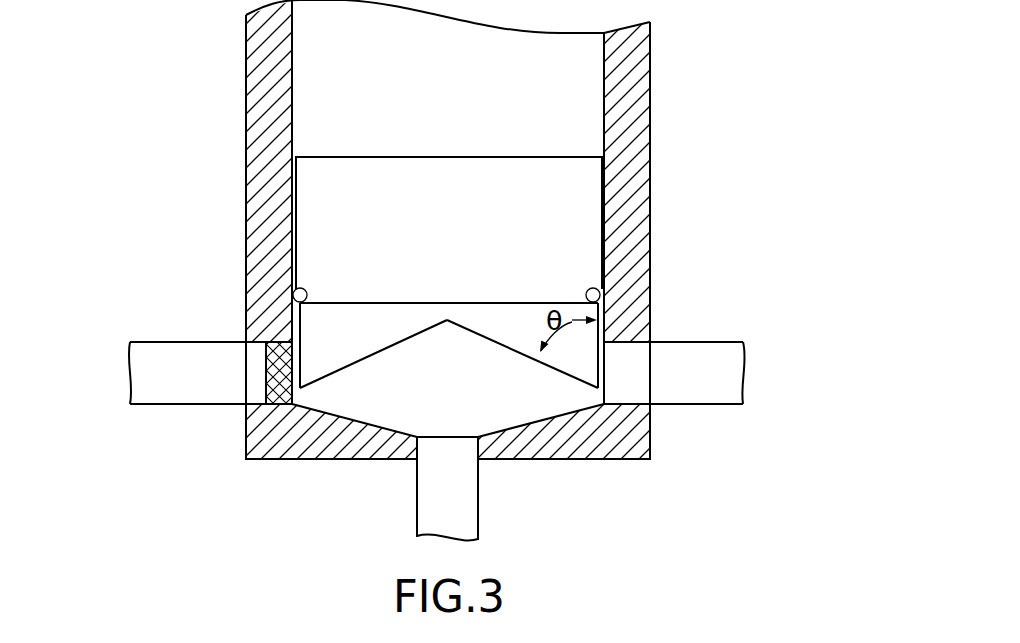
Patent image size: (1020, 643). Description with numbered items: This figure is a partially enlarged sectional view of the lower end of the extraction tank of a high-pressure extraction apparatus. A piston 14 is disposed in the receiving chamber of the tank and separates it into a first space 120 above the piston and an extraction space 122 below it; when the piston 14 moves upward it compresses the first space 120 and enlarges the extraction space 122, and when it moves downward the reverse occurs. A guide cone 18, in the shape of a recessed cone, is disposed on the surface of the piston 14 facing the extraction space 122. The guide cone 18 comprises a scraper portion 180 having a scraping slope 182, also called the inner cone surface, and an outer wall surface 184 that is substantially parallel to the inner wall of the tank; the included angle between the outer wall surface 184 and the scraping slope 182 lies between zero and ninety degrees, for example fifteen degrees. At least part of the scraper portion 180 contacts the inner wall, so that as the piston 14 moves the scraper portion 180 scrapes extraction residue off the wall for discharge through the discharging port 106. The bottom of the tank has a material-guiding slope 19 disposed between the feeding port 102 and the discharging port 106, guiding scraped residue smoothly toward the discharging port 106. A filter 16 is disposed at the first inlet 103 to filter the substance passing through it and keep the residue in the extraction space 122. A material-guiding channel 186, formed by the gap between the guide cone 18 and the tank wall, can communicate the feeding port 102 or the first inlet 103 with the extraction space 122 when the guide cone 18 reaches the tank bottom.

The first space 120 is at (562, 71).
The piston 14 is at (332, 203).
The guide cone 18 is at (352, 327).
The filter 16 is at (281, 348).
The first inlet 103 is at (258, 372).
The feeding port 102 is at (615, 369).
The discharging port 106 is at (447, 443).
The extraction space 122 is at (395, 407).
The scraping slope 182 is at (496, 350).
The scraper portion 180 is at (596, 382).
The outer wall surface 184 is at (607, 327).
The material-guiding channel 186 is at (598, 395).
The material-guiding slope 19 is at (517, 424).